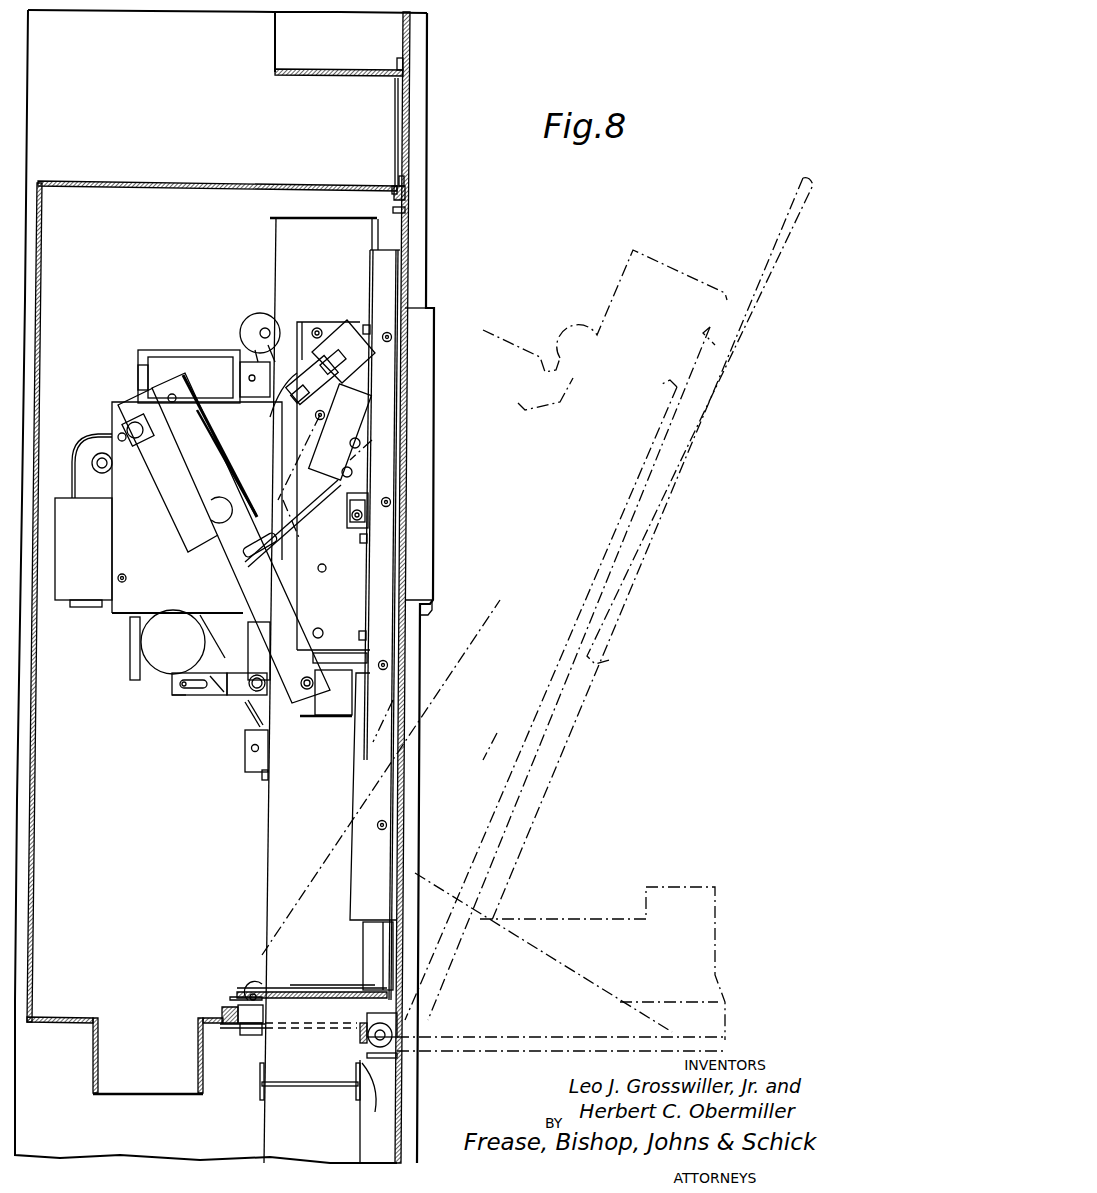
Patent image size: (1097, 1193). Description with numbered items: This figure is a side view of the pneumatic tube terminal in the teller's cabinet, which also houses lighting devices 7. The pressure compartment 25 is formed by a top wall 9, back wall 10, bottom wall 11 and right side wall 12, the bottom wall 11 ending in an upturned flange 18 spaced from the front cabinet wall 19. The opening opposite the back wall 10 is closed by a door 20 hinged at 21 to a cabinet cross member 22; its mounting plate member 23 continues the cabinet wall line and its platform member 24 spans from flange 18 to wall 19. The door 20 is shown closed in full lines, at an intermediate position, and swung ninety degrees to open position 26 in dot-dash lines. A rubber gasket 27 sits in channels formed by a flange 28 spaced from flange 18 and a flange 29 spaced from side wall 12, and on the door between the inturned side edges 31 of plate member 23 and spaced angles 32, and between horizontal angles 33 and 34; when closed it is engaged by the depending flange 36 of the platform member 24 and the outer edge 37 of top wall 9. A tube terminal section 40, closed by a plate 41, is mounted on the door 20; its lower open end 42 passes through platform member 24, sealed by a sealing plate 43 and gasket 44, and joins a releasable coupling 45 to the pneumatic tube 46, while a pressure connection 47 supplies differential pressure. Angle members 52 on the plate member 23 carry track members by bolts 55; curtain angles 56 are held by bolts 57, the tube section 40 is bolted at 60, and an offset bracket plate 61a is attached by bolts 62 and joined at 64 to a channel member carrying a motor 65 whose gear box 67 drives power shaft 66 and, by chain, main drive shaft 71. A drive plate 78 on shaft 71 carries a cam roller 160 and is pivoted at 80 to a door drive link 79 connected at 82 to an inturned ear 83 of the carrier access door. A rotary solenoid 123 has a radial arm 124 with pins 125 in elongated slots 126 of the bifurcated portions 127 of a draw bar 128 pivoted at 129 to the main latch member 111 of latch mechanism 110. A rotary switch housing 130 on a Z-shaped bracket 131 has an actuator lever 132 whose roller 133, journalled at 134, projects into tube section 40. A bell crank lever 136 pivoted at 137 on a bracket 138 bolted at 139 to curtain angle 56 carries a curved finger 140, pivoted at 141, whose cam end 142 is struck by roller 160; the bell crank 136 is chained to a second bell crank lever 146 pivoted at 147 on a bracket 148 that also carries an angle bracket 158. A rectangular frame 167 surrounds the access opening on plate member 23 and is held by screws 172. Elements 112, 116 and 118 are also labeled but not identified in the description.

The lighting devices 7 is at (412, 43).
The top wall 9 is at (190, 184).
The back wall 10 is at (42, 330).
The bottom wall 11 is at (50, 1017).
The right side wall 12 is at (113, 814).
The upturned flange 18 is at (256, 1022).
The front cabinet wall 19 is at (401, 1111).
The door 20 is at (422, 150).
The hinge 21 is at (386, 1034).
The cabinet cross member 22 is at (363, 1040).
The mounting plate member 23 is at (411, 272).
The platform member 24 is at (235, 989).
The pressure compartment 25 is at (101, 200).
The open position 26 is at (727, 946).
The gasket 27 is at (406, 192).
The flange 28 is at (224, 1010).
The flange 29 is at (252, 980).
The inturned vertical side edges 31 is at (400, 112).
The spaced angles 32 is at (397, 234).
The spaced angle 33 is at (400, 176).
The spaced angle 34 is at (400, 206).
The flange 36 is at (232, 1003).
The outer edge 37 is at (393, 188).
The tube terminal section 40 is at (260, 846).
The plate 41 is at (290, 216).
The lower open end 42 is at (285, 1065).
The sealing plate 43 is at (300, 986).
The gasket 44 is at (312, 993).
The releasable coupling 45 is at (372, 1111).
The pneumatic tube 46 is at (268, 1130).
The pressure connection 47 is at (96, 1063).
The angle members 52 is at (356, 760).
The bolts 55 is at (391, 335).
The curtain angles 56 is at (340, 597).
The bolts 57 is at (365, 325).
The bolts 60 is at (356, 656).
The offset bracket plate 61a is at (177, 594).
The bolts 62 is at (320, 421).
The bolts 64 is at (122, 442).
The motor 65 is at (66, 600).
The power shaft 66 is at (101, 453).
The gear box 67 is at (80, 462).
The main drive shaft 71 is at (203, 540).
The drive plate 78 is at (163, 487).
The door drive link 79 is at (253, 585).
The pivot 80 is at (174, 402).
The pivotal connections 82 is at (300, 708).
The inturned ears 83 is at (332, 708).
The latch mechanism 110 is at (238, 741).
The main latch member 111 is at (258, 712).
The pin 112 is at (252, 750).
The catch 116 is at (262, 779).
The bracket 118 is at (254, 634).
The rotary solenoid 123 is at (155, 632).
The radial arm 124 is at (177, 695).
The pins 125 is at (178, 683).
The elongated slots 126 is at (196, 688).
The bifurcated portions 127 is at (217, 686).
The draw bar 128 is at (247, 675).
The pivotal connection 129 is at (263, 679).
The rotary switch housing 130 is at (138, 360).
The Z-shaped bracket 131 is at (160, 350).
The radial arm actuator lever 132 is at (245, 355).
The roller 133 is at (260, 312).
The journal 134 is at (255, 318).
The bell crank lever 136 is at (363, 460).
The pivot 137 is at (360, 442).
The bracket 138 is at (364, 498).
The bolts 139 is at (317, 327).
The curved finger 140 is at (320, 505).
The pivot 141 is at (353, 472).
The cam engaging outer end 142 is at (242, 546).
The bell crank lever 146 is at (310, 408).
The pivot 147 is at (290, 408).
The bracket 148 is at (295, 383).
The angle bracket 158 is at (326, 359).
The cam roller 160 is at (140, 437).
The rectangular frame 167 is at (431, 384).
The screws 172 is at (419, 607).